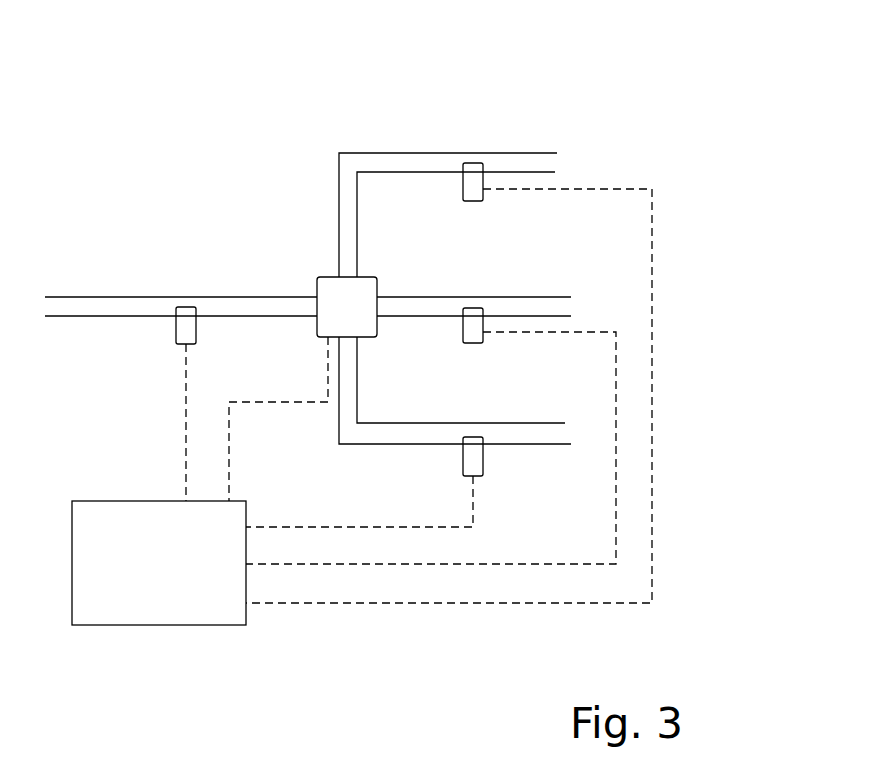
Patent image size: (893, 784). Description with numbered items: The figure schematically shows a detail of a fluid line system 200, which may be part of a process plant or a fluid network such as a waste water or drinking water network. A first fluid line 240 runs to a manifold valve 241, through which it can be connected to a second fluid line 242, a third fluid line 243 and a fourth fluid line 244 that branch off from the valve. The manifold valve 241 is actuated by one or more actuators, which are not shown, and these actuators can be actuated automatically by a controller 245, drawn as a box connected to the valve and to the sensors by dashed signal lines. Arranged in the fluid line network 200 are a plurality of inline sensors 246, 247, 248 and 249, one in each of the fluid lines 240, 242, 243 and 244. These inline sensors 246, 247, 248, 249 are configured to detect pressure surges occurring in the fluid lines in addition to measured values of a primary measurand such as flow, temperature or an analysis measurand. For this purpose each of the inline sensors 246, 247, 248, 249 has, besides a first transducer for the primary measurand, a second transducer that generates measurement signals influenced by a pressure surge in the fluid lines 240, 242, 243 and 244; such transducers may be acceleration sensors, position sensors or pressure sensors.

The fluid line system 200 is at (652, 131).
The first fluid line 240 is at (112, 303).
The manifold valve 241 is at (328, 287).
The second fluid line 242 is at (398, 160).
The third fluid line 243 is at (415, 310).
The fourth fluid line 244 is at (407, 435).
The controller 245 is at (173, 581).
The inline sensor 246 is at (180, 333).
The inline sensor 247 is at (477, 168).
The inline sensor 248 is at (473, 347).
The inline sensor 249 is at (472, 460).